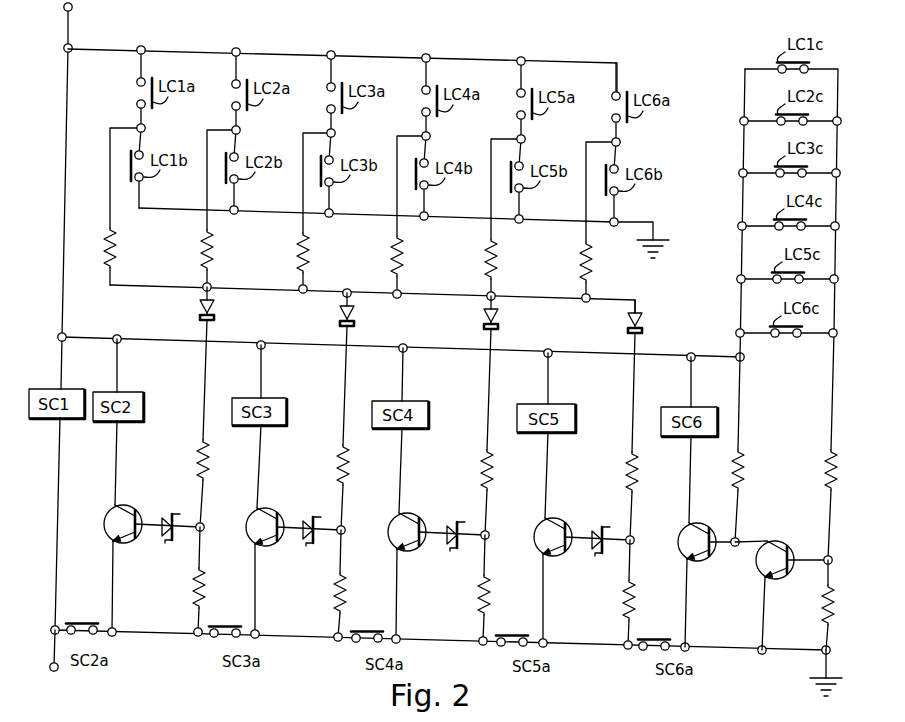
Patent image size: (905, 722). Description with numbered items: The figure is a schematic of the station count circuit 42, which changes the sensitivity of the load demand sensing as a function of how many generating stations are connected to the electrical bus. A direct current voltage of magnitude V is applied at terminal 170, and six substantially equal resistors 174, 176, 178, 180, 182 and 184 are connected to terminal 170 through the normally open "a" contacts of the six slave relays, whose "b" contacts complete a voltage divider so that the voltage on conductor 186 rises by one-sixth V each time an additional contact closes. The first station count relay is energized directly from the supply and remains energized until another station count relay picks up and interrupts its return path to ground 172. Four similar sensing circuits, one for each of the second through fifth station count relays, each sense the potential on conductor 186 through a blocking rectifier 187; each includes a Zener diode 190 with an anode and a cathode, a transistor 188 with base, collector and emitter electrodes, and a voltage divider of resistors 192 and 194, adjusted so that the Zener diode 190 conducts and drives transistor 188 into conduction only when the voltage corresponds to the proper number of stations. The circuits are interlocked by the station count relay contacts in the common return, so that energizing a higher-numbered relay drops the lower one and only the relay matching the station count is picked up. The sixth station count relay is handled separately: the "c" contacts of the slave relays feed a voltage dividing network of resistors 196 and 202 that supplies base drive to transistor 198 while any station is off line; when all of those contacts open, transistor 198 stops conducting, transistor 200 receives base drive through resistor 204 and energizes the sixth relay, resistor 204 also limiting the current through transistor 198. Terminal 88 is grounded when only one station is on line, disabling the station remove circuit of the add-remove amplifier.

The station count circuit 42 is at (469, 37).
The terminal 170 is at (73, 9).
The ground 172 is at (812, 681).
The resistor 174 is at (116, 261).
The resistor 176 is at (213, 263).
The resistor 178 is at (309, 266).
The resistor 180 is at (403, 268).
The resistor 182 is at (497, 271).
The resistor 184 is at (592, 273).
The conductor 186 is at (167, 289).
The blocking rectifier 187 is at (215, 314).
The transistor 188 is at (104, 527).
The Zener diode 190 is at (175, 512).
The resistor 192 is at (196, 460).
The resistor 194 is at (191, 595).
The resistor 196 is at (825, 472).
The transistor 198 is at (778, 546).
The transistor 200 is at (680, 544).
The resistor 202 is at (820, 609).
The resistor 204 is at (733, 474).
The terminal 88 is at (58, 671).